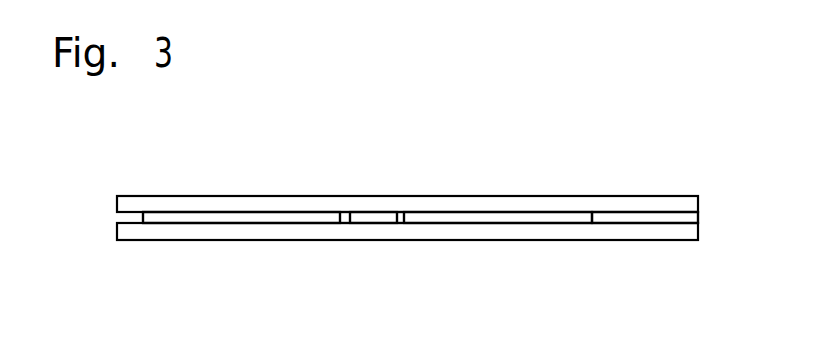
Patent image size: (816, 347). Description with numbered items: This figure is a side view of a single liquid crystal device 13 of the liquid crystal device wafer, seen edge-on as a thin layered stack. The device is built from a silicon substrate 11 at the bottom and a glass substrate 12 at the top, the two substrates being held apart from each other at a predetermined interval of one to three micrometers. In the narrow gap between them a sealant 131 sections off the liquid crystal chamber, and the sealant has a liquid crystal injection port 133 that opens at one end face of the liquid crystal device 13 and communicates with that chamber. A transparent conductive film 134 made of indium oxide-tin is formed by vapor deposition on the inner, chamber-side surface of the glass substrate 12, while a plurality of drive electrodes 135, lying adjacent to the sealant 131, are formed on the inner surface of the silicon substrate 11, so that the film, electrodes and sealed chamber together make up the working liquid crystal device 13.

The silicon substrate 11 is at (245, 230).
The glass substrate 12 is at (247, 207).
The liquid crystal device 13 is at (429, 196).
The sealant 131 is at (193, 220).
The liquid crystal injection port 133 is at (377, 218).
The transparent conductive film 134 is at (513, 215).
The drive electrodes 135 is at (647, 218).